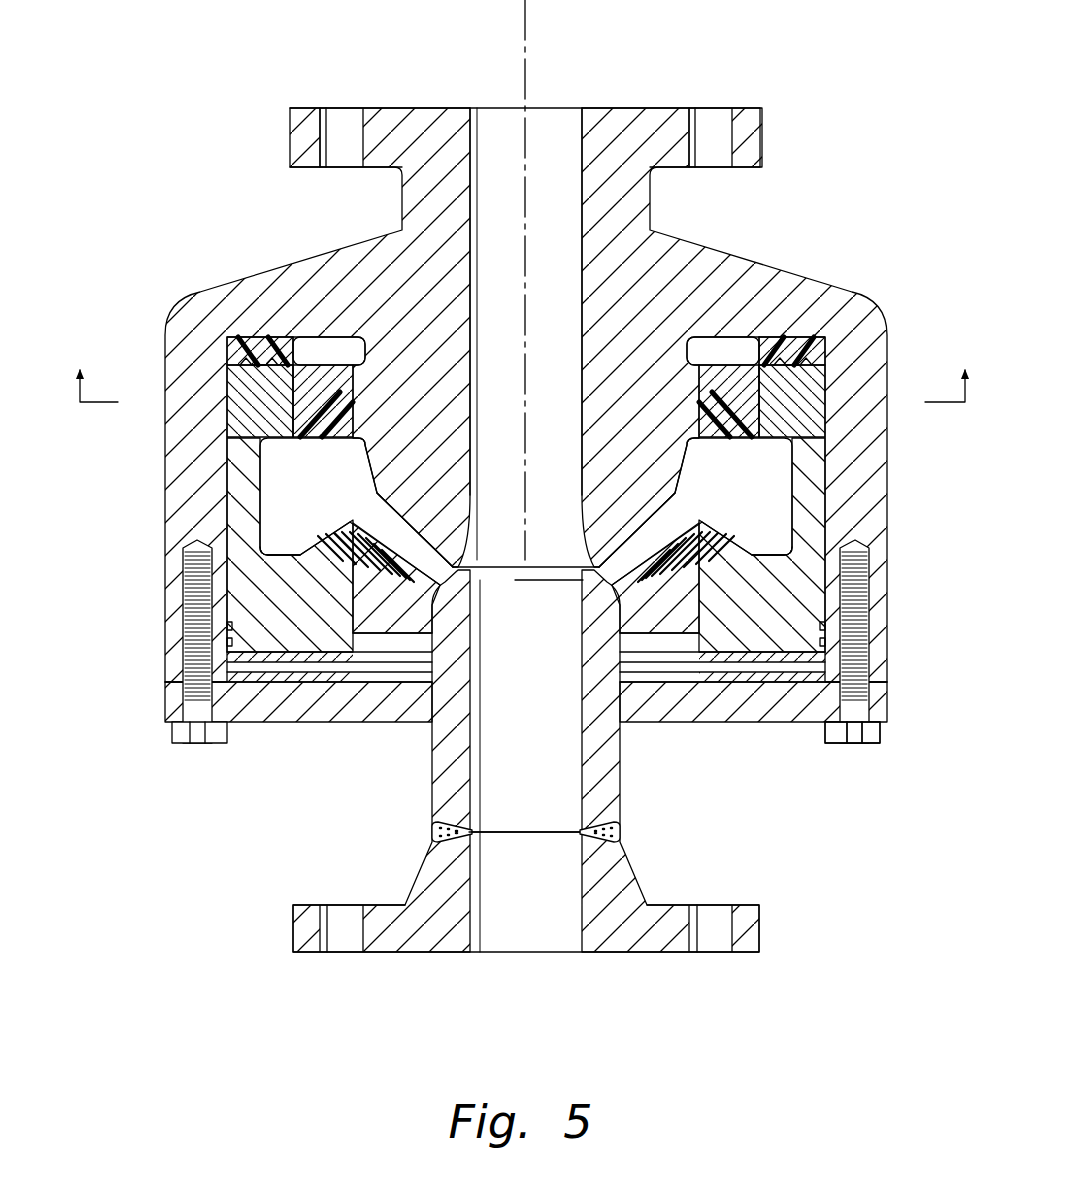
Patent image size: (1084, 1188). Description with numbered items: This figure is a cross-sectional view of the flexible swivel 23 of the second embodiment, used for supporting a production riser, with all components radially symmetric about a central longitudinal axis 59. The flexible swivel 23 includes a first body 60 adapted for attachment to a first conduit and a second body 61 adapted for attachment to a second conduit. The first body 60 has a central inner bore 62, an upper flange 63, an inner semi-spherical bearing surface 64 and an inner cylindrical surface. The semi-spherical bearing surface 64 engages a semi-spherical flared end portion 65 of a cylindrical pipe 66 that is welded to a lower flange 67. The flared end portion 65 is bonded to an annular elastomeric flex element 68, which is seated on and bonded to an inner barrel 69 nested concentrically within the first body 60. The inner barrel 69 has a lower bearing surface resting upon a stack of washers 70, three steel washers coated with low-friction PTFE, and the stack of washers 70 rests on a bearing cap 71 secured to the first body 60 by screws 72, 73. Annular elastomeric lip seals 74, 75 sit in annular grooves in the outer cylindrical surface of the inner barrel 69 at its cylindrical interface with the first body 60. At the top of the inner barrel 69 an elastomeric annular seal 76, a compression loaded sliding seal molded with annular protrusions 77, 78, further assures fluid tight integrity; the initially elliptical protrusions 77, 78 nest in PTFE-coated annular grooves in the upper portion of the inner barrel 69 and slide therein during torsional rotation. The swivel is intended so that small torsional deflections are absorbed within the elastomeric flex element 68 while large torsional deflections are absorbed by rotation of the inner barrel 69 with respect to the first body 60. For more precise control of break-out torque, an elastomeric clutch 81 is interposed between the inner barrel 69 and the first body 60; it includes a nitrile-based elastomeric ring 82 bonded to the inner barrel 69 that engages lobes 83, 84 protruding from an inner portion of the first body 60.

The flexible swivel 23 is at (846, 185).
The central longitudinal axis 59 is at (524, 27).
The first body 60 is at (760, 262).
The second body 61 is at (660, 818).
The central inner bore 62 is at (564, 118).
The upper flange 63 is at (762, 138).
The inner semi-spherical bearing surface 64 is at (680, 476).
The semi-spherical flared end portion 65 is at (356, 520).
The cylindrical pipe 66 is at (620, 778).
The lower flange 67 is at (640, 870).
The annular elastomeric flex element 68 is at (730, 528).
The inner barrel 69 is at (804, 541).
The stack of washers 70 is at (690, 690).
The bearing cap 71 is at (775, 724).
The screw 72 is at (855, 745).
The screw 73 is at (200, 745).
The annular elastomeric lip seal 74 is at (835, 652).
The annular elastomeric lip seal 75 is at (828, 628).
The elastomeric annular seal 76 is at (810, 338).
The annular protrusion 77 is at (766, 352).
The annular protrusion 78 is at (830, 338).
The elastomeric clutch 81 is at (762, 405).
The elastomeric ring 82 is at (745, 440).
The lobe 83 is at (350, 455).
The lobe 84 is at (690, 440).